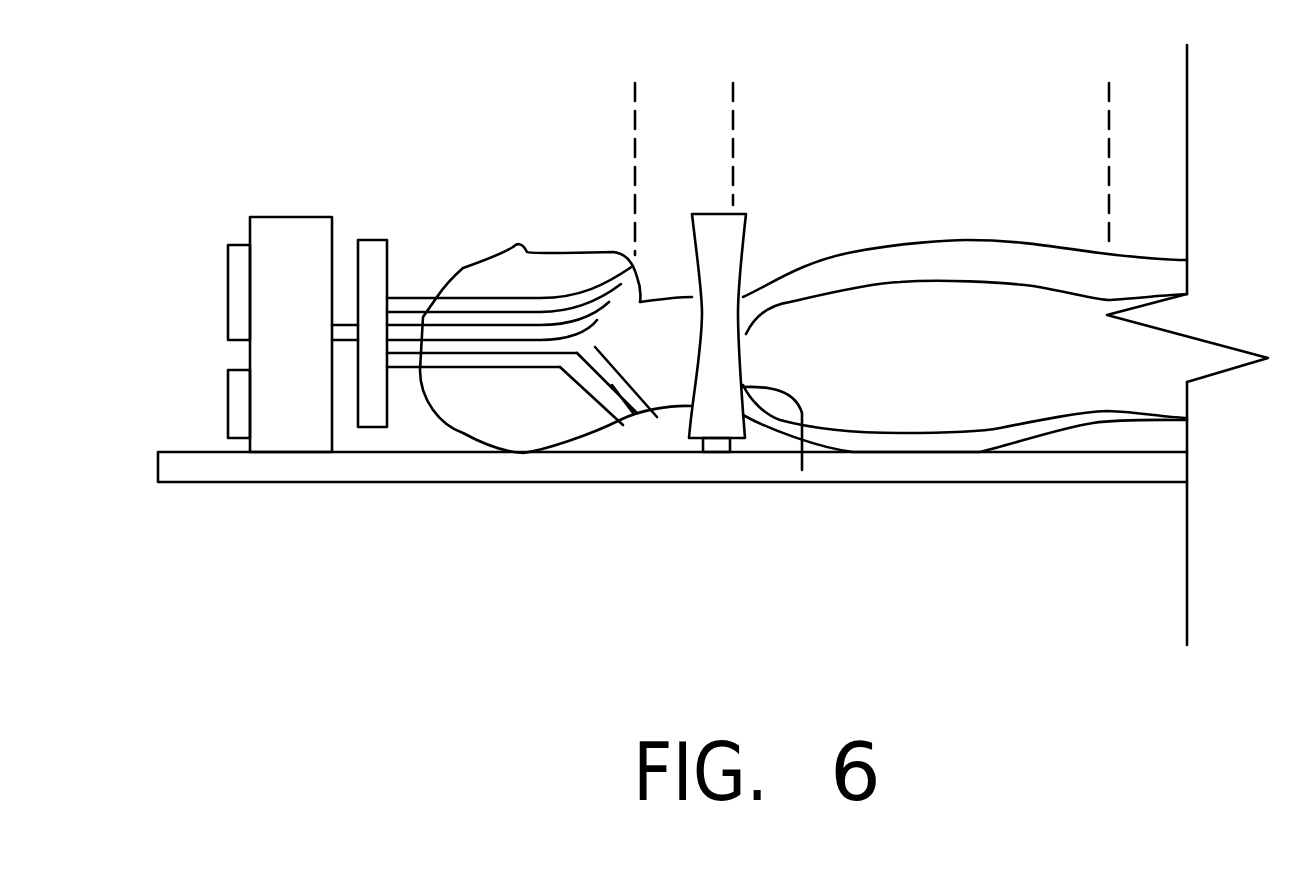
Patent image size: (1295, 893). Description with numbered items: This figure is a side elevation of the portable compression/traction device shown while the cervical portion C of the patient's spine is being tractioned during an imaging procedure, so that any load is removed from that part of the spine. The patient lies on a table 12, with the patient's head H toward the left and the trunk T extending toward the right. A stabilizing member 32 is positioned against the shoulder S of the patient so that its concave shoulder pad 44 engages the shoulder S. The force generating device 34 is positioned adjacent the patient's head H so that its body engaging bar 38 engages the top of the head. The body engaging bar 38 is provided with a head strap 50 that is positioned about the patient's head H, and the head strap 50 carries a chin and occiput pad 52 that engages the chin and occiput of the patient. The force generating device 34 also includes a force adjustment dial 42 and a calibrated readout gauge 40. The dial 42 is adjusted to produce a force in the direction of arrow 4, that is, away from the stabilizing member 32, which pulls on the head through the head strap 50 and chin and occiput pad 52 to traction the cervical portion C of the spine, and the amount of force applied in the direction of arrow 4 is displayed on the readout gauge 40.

The arrow 4 is at (383, 27).
The base plate 12 is at (987, 484).
The stabilizing member 32 is at (746, 214).
The force generating device 34 is at (267, 217).
The body engaging bar 38 is at (372, 240).
The calibrated readout gauge 40 is at (229, 297).
The force adjustment dial 42 is at (229, 415).
The concave shoulder pad 44 is at (745, 250).
The head strap 50 is at (405, 369).
The chin and occiput pad 52 is at (628, 350).
The patient's head H is at (463, 268).
The cervical portion of the spine C is at (684, 143).
The tissue T is at (1005, 338).
The shoulder S is at (802, 470).